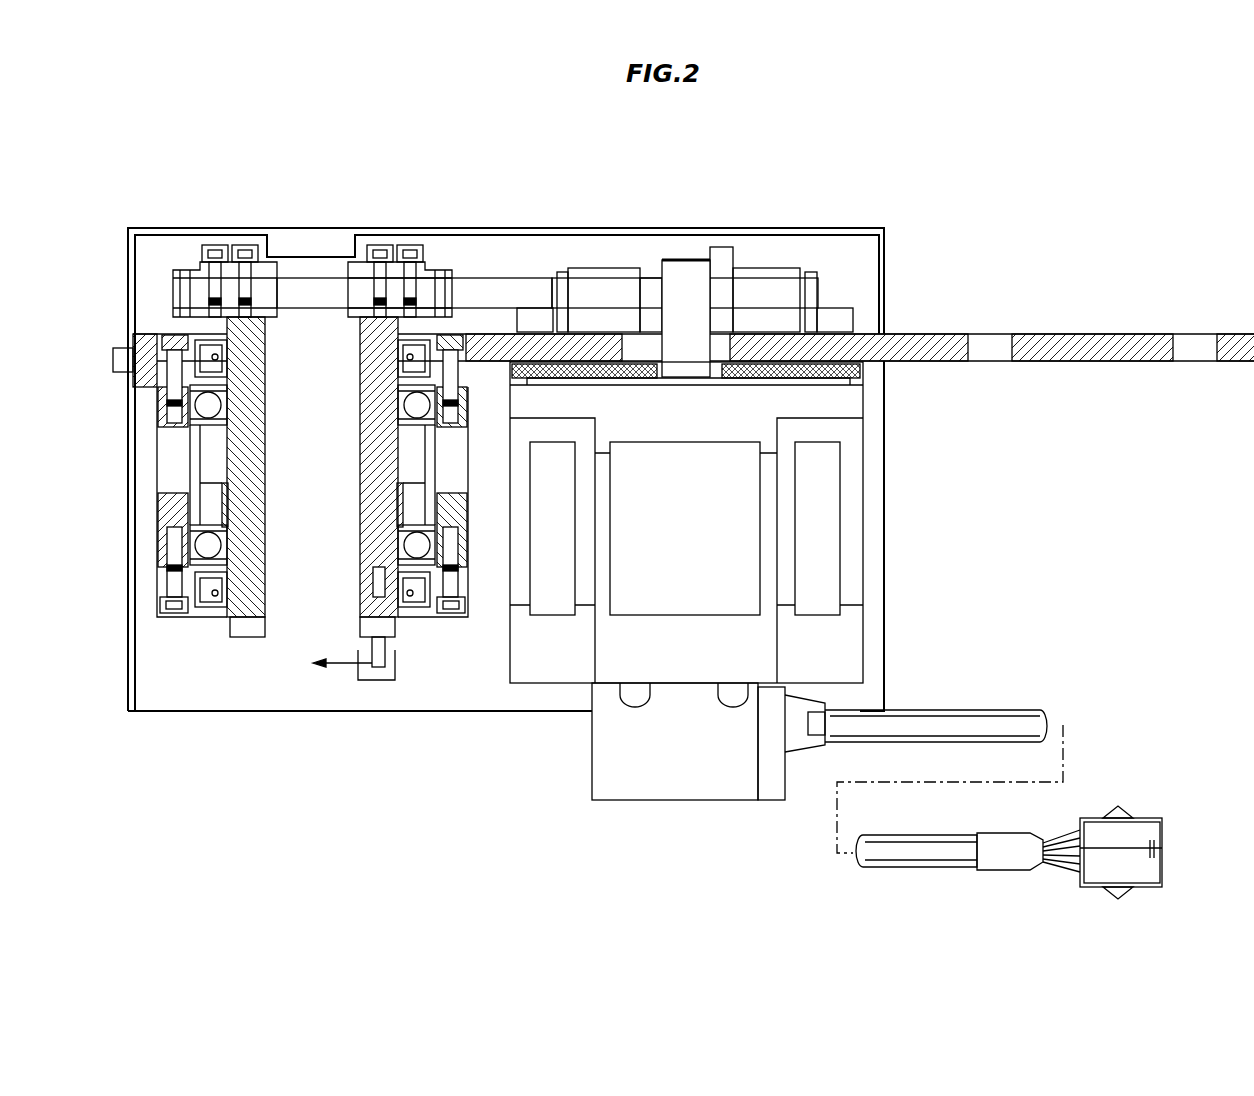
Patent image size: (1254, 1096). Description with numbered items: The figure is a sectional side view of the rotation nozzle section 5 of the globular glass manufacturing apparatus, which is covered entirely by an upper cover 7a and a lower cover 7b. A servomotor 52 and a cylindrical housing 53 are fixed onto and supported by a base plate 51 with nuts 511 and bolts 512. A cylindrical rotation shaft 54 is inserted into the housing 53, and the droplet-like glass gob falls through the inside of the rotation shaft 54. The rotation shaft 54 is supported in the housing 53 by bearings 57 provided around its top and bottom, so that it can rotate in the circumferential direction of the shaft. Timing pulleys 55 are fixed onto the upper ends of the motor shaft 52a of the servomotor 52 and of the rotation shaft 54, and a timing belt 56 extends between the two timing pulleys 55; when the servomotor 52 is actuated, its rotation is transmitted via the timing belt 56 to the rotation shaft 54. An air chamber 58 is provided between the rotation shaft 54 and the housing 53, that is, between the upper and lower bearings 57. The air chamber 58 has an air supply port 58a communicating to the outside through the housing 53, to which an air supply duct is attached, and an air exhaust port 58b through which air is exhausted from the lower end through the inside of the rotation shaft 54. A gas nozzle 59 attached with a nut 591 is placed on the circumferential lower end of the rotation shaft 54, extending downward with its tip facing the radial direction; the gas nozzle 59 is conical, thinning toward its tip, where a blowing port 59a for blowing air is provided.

The rotation nozzle section 5 is at (598, 170).
The upper cover 7a is at (150, 228).
The lower cover 7b is at (130, 655).
The base plate 51 is at (938, 328).
The nut 511 is at (535, 315).
The bolt 512 is at (243, 245).
The servomotor 52 is at (872, 624).
The motor shaft 52a is at (680, 325).
The housing 53 is at (150, 509).
The rotation shaft 54 is at (205, 440).
The timing pulley 55 is at (195, 270).
The timing belt 56 is at (492, 300).
The bearing 57 is at (272, 318).
The air chamber 58 is at (186, 470).
The air supply port 58a is at (158, 480).
The air exhaust port 58b is at (418, 602).
The gas nozzle 59 is at (366, 680).
The blowing port 59a is at (373, 577).
The nut 591 is at (323, 668).